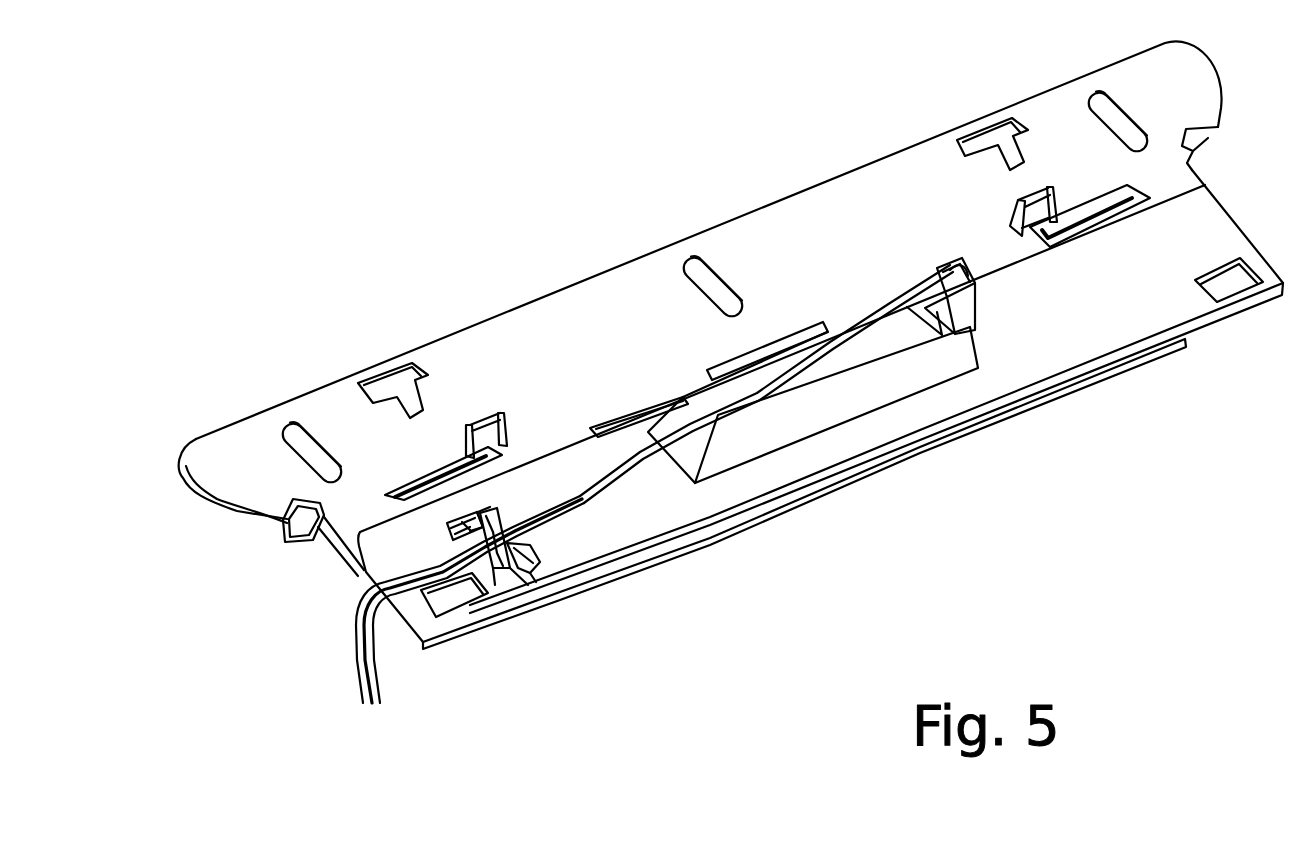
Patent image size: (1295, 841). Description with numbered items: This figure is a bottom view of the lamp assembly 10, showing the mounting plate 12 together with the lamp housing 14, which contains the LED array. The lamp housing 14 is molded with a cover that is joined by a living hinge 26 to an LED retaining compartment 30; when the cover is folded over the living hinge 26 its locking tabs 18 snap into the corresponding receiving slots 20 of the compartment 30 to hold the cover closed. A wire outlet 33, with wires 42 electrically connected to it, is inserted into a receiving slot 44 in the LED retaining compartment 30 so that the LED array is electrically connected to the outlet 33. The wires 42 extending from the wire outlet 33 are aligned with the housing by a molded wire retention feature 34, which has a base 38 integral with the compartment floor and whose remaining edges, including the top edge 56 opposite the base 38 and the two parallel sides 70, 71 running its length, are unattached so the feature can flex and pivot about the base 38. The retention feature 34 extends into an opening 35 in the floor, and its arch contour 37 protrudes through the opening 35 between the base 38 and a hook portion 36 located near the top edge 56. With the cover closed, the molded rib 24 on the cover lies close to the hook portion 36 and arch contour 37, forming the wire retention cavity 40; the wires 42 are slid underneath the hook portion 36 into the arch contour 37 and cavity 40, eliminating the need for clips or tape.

The lighting assembly 10 is at (488, 194).
The mounting plate 12 is at (858, 180).
The lamp housing 14 is at (1160, 304).
The locking tab 18 is at (612, 425).
The receiving slot 20 is at (668, 402).
The rib 24 is at (389, 494).
The living hinge 26 is at (934, 443).
The LED retaining compartment 30 is at (1203, 228).
The wire outlet 33 is at (977, 292).
The wire retention feature 34 is at (488, 512).
The opening 35 is at (540, 565).
The hook portion 36 is at (447, 524).
The arch contour 37 is at (537, 555).
The base 38 is at (527, 585).
The wire retention cavity 40 is at (494, 587).
The wires 42 is at (617, 485).
The receiving slot 44 is at (958, 266).
The top edge 56 is at (483, 512).
The side 70 is at (455, 552).
The side 71 is at (494, 560).